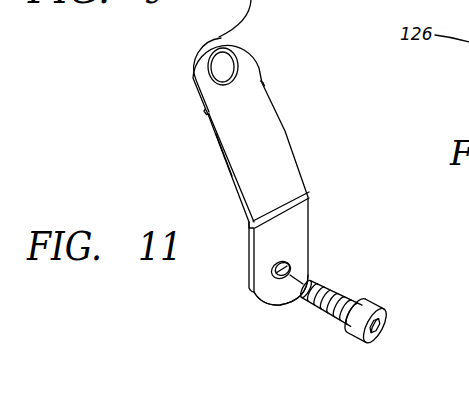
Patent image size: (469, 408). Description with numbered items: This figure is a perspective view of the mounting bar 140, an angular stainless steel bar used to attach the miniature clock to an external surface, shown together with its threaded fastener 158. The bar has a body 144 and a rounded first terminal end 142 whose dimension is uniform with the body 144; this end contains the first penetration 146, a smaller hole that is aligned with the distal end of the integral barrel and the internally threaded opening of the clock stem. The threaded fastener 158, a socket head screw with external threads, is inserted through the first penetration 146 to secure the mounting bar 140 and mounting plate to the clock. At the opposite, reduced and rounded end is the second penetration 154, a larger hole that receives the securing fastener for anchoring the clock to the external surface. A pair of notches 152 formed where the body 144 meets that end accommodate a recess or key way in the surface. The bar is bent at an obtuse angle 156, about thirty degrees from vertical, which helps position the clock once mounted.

The mounting bar 140 is at (265, 135).
The first terminal end 142 is at (263, 294).
The body 144 is at (245, 177).
The first penetration 146 is at (290, 265).
The pair of notches 152 is at (207, 111).
The second penetration 154 is at (225, 62).
The obtuse angle 156 is at (305, 197).
The threaded fastener 158 is at (373, 305).